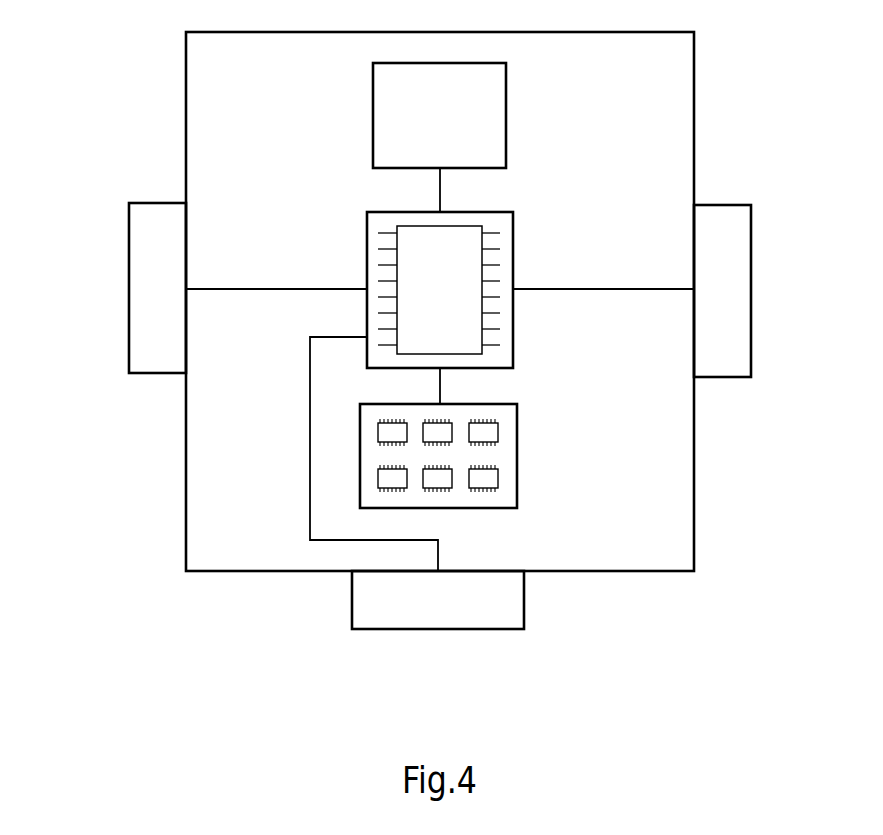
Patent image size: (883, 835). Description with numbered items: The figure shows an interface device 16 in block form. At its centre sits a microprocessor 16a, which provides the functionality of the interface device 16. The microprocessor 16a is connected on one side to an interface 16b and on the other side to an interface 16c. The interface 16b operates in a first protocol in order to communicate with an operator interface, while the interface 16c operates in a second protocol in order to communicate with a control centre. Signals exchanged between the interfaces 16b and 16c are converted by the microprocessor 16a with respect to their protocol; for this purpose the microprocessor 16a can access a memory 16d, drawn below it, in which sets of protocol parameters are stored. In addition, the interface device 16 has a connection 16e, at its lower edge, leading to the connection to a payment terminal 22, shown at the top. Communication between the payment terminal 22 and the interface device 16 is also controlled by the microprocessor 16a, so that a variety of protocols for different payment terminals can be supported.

The interface device 16 is at (669, 641).
The microprocessor 16a is at (458, 303).
The interface 16b is at (144, 285).
The interface 16c is at (735, 288).
The memory 16d is at (503, 456).
The connection 16e is at (443, 613).
The payment terminal 22 is at (454, 129).